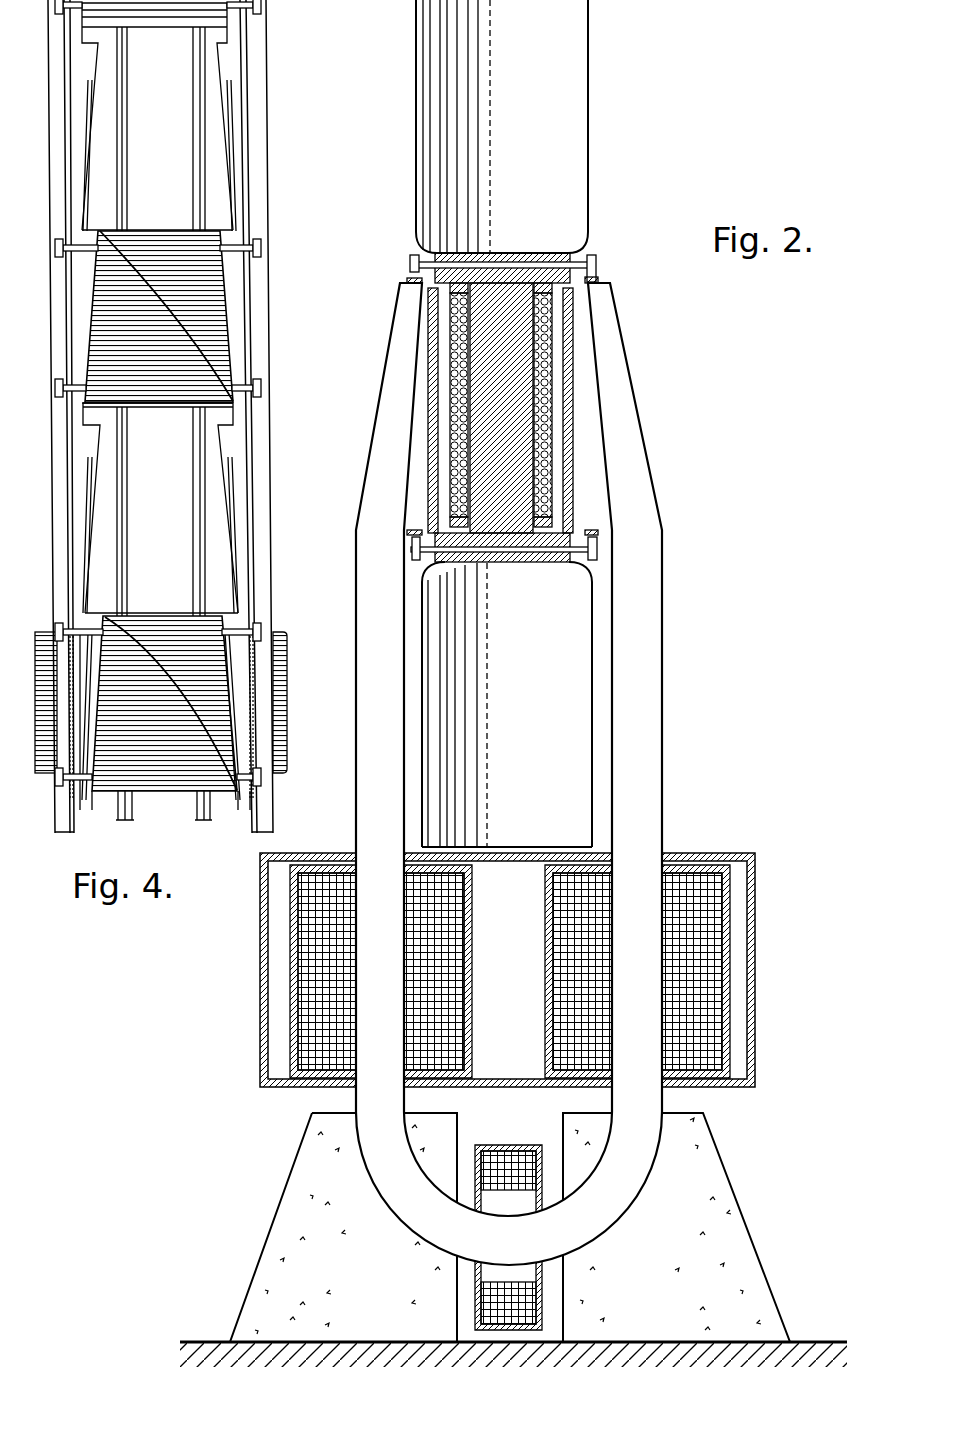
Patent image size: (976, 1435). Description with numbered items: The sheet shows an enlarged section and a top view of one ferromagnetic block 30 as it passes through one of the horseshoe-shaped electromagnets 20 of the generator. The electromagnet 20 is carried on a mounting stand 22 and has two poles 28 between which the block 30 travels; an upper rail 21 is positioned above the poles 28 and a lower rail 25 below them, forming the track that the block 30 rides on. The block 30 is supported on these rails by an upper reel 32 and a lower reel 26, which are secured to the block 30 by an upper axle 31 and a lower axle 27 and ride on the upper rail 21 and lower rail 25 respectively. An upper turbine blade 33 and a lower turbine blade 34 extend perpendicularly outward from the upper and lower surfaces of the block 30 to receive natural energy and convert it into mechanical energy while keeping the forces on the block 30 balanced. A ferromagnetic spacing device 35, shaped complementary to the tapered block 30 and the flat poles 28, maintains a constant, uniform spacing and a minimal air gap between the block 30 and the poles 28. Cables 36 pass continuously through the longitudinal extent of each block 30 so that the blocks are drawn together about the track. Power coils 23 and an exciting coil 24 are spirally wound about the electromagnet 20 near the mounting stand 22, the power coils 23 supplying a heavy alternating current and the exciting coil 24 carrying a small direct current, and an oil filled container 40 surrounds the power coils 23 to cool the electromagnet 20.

In FIG. 2, the horse-shoe shaped electromagnet 20 is at (531, 632).
In FIG. 4, the horse-shoe shaped electromagnet 20 is at (181, 436).
In FIG. 2, the upper rail 21 is at (405, 280).
In FIG. 4, the upper rail 21 is at (60, 217).
In FIG. 2, the mounting stand 22 is at (718, 1180).
In FIG. 2, the power coil 23 is at (290, 1020).
In FIG. 2, the exciting coil 24 is at (545, 1310).
In FIG. 2, the lower rail 25 is at (410, 530).
In FIG. 2, the lower reel 26 is at (412, 553).
In FIG. 2, the lower axle 27 is at (458, 550).
In FIG. 2, the pole 28 is at (383, 400).
In FIG. 4, the pole 28 is at (45, 773).
In FIG. 2, the block 30 is at (513, 412).
In FIG. 4, the block 30 is at (153, 22).
In FIG. 2, the upper axle 31 is at (457, 270).
In FIG. 4, the upper axle 31 is at (228, 252).
In FIG. 2, the upper reel 32 is at (410, 256).
In FIG. 4, the upper reel 32 is at (262, 8).
In FIG. 2, the upper turbine blade 33 is at (572, 107).
In FIG. 4, the upper turbine blade 33 is at (142, 260).
In FIG. 2, the lower turbine blade 34 is at (575, 784).
In FIG. 2, the spacing device 35 is at (435, 442).
In FIG. 4, the spacing device 35 is at (235, 493).
In FIG. 2, the cable 36 is at (457, 470).
In FIG. 4, the cable 36 is at (194, 128).
In FIG. 2, the oil filled container 40 is at (757, 945).